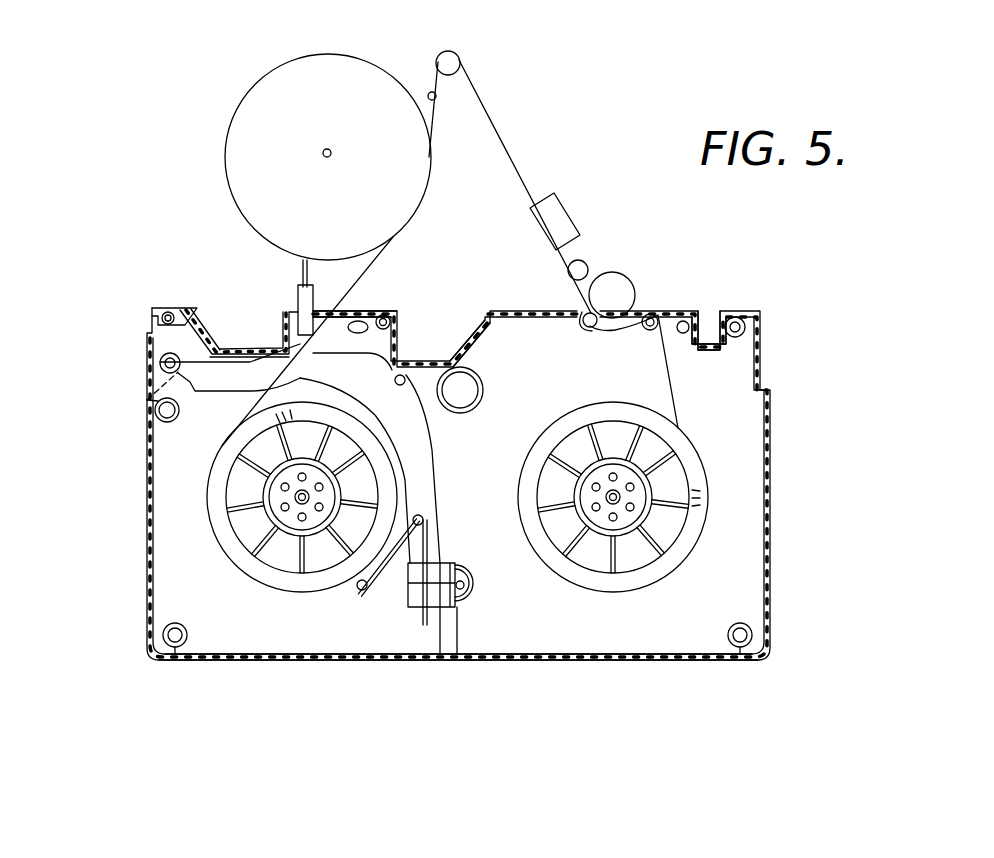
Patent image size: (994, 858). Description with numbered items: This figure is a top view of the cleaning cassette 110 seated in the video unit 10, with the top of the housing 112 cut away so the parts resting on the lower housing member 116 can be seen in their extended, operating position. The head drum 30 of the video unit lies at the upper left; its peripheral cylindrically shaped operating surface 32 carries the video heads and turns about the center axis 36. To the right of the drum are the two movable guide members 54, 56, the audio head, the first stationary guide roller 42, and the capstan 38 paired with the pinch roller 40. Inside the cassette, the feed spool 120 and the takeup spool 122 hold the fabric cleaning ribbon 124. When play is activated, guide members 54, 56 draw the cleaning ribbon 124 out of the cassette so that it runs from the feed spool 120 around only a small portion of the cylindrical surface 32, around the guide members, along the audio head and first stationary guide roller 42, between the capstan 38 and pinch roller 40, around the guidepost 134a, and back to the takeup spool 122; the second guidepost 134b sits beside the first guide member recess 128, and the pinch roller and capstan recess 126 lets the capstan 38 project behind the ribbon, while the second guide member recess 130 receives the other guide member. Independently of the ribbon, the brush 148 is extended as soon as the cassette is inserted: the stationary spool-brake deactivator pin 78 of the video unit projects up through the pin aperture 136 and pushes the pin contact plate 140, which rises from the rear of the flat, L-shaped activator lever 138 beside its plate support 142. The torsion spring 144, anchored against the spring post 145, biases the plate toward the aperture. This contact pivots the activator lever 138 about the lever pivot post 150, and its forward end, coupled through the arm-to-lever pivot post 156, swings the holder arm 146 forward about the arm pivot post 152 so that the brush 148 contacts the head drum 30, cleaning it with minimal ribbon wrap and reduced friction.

The video unit 10 is at (146, 165).
The head drum 30 is at (248, 137).
The peripheral cylindrically shaped operating surface 32 is at (280, 70).
The center axis 36 is at (329, 148).
The capstan 38 is at (583, 312).
The pinch roller 40 is at (635, 275).
The first stationary guide roller 42 is at (590, 260).
The guide member 54 is at (434, 100).
The guide member 56 is at (445, 58).
The spool-brake deactivator pin 78 is at (470, 605).
The cleaning cassette 110 is at (124, 694).
The housing 112 is at (147, 540).
The lower housing member 116 is at (267, 660).
The feed spool 120 is at (212, 497).
The takeup spool 122 is at (708, 498).
The cleaning ribbon 124 is at (506, 150).
The pinch roller and capstan recess 126 is at (597, 323).
The first guide member recess 128 is at (478, 345).
The second guide member recess 130 is at (225, 352).
The guidepost 134a is at (660, 312).
The guidepost 134b is at (398, 312).
The pin aperture 136 is at (466, 585).
The activator lever 138 is at (440, 488).
The pin contact plate 140 is at (448, 562).
The plate support 142 is at (445, 607).
The torsion spring 144 is at (385, 600).
The spring post 145 is at (360, 600).
The holder arm 146 is at (245, 355).
The brush 148 is at (300, 272).
The lever pivot post 150 is at (404, 385).
The arm pivot post 152 is at (160, 362).
The arm-to-lever pivot post 156 is at (155, 411).